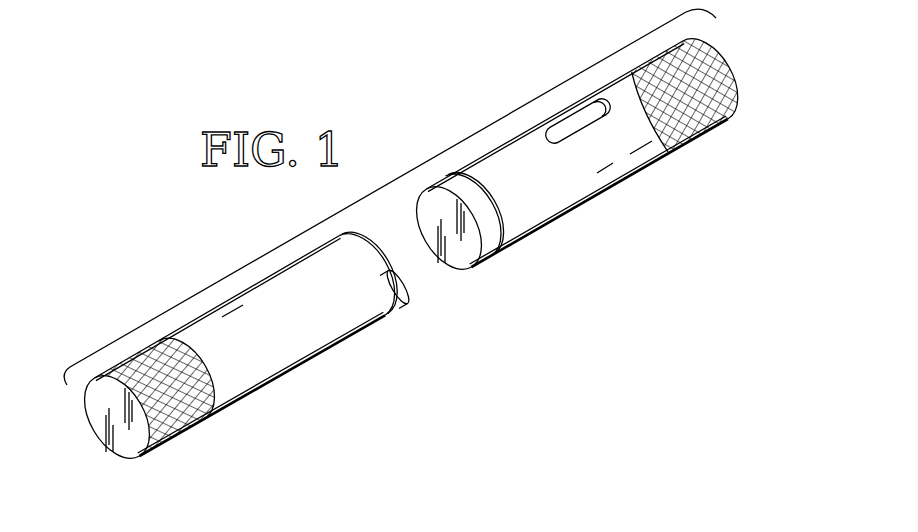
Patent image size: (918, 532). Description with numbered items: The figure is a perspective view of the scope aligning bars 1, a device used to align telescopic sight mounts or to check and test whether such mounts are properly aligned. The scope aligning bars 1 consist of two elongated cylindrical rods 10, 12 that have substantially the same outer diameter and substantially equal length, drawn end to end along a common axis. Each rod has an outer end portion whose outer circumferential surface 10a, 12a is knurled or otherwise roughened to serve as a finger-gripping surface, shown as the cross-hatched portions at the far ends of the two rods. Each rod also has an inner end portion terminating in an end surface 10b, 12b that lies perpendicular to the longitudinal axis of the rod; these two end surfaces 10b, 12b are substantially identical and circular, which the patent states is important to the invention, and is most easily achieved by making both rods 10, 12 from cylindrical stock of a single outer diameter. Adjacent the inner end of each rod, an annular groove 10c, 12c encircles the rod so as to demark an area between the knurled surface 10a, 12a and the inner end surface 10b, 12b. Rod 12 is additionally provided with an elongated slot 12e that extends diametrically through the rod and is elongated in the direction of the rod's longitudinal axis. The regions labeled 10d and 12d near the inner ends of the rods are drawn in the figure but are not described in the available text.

The scope aligning bars 1 is at (412, 172).
The elongated cylindrical rod 10 is at (273, 368).
The outer circumferential surface 10a is at (193, 427).
The end surface 10b is at (407, 285).
The annular groove 10c is at (376, 285).
The pin base 10d is at (402, 312).
The elongated cylindrical rod 12 is at (590, 175).
The outer circumferential surface 12a is at (731, 121).
The end surface 12b is at (477, 258).
The annular groove 12c is at (475, 208).
The flange ring 12d is at (472, 214).
The elongated slot 12e is at (590, 117).